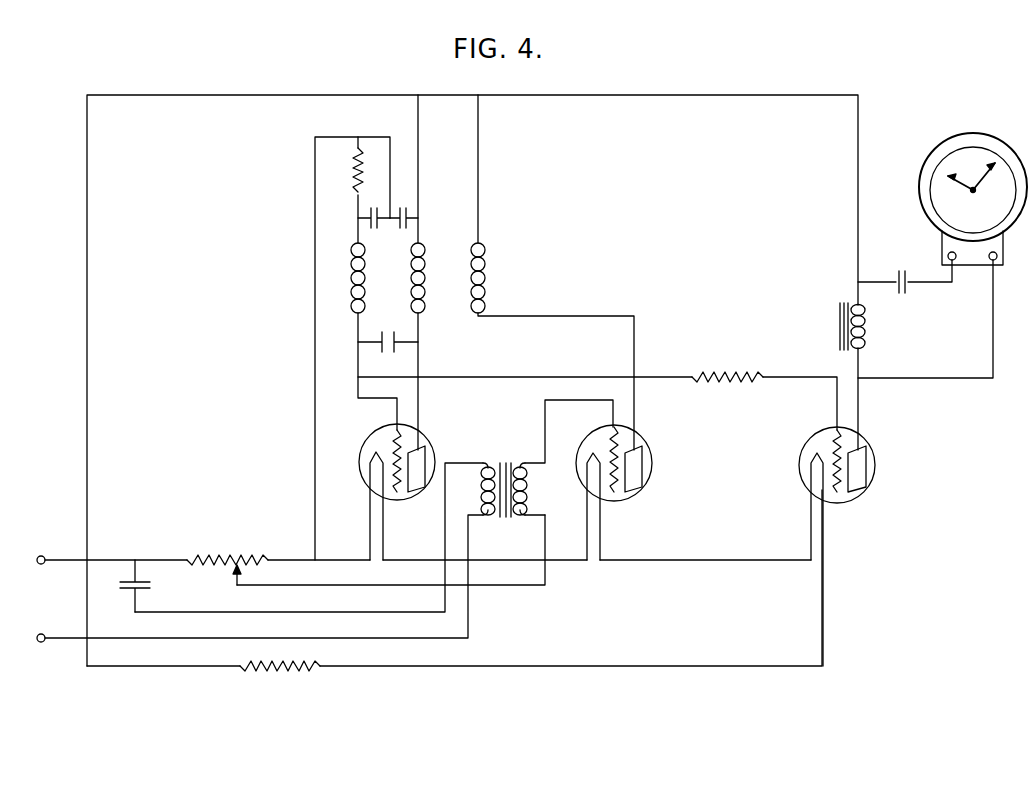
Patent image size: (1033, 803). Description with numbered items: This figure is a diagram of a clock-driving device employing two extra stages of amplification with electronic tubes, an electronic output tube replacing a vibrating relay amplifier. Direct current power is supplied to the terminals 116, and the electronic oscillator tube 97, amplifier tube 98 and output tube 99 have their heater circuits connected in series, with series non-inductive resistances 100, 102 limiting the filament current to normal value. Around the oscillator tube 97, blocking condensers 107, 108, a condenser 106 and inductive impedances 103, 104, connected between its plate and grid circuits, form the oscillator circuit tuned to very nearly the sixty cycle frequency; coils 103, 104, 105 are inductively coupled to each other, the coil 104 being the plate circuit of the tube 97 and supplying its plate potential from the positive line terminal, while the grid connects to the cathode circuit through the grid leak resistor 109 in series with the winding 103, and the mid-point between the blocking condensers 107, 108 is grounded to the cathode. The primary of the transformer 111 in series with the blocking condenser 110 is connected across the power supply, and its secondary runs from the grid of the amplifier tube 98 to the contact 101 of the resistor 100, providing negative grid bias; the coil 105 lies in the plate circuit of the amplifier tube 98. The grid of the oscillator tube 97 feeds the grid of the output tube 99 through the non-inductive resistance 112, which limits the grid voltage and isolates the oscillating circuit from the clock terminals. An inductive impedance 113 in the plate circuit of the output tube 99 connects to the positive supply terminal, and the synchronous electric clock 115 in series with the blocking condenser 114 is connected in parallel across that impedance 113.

The electronic oscillator tube 97 is at (433, 440).
The amplifier tube 98 is at (652, 437).
The output tube 99 is at (878, 441).
The series non-inductive resistance 100 is at (248, 552).
The contact of the resistor 101 is at (232, 577).
The series non-inductive resistance 102 is at (275, 672).
The inductive impedance winding 103 is at (368, 274).
The inductive impedance winding 104 is at (428, 274).
The coil 105 is at (488, 272).
The condenser 106 is at (378, 332).
The blocking condenser 107 is at (367, 212).
The blocking condenser 108 is at (397, 212).
The grid leak resistor 109 is at (350, 185).
The blocking condenser 110 is at (125, 594).
The transformer 111 is at (495, 448).
The non-inductive resistance 112 is at (710, 366).
The inductive impedance 113 is at (866, 326).
The blocking condenser 114 is at (912, 292).
The synchronous electric clock 115 is at (926, 155).
The terminals 116 is at (45, 568).